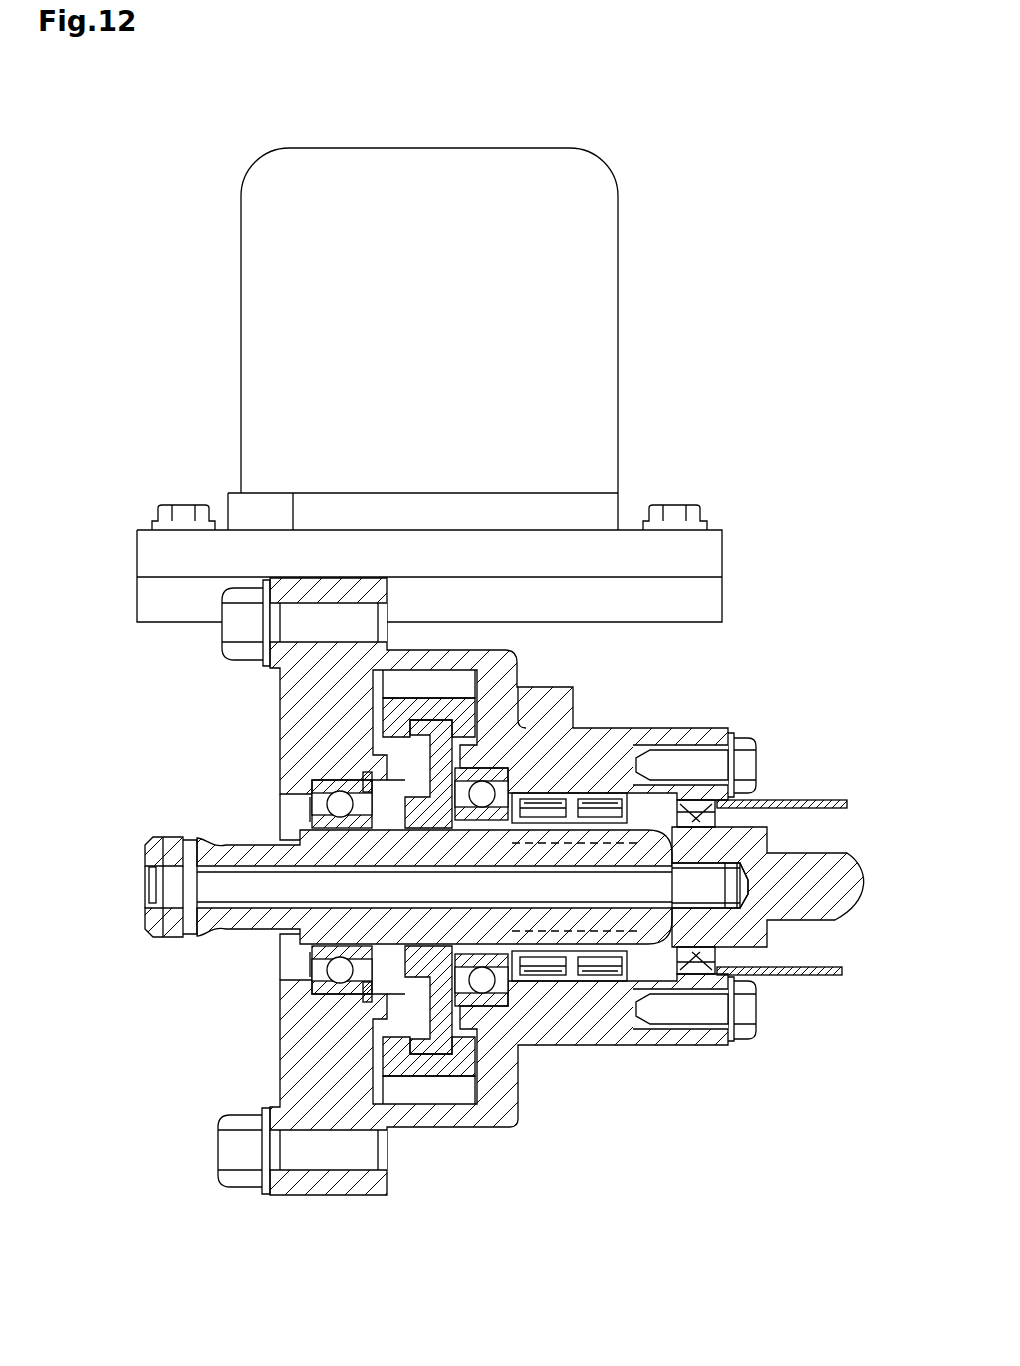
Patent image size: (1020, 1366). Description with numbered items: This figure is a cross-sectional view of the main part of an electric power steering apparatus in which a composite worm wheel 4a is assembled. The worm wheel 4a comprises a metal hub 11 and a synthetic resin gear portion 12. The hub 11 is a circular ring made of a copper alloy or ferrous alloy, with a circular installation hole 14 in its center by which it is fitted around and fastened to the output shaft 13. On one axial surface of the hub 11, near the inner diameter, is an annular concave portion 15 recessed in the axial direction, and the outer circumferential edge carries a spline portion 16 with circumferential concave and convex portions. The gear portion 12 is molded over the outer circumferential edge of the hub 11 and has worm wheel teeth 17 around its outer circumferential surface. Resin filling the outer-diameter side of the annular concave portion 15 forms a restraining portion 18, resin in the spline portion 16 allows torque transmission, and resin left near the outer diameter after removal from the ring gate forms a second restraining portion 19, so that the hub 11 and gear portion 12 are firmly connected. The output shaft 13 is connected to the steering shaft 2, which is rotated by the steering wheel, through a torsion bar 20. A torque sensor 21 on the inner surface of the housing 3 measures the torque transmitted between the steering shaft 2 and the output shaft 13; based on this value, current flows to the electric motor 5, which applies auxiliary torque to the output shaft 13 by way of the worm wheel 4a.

The steering shaft 2 is at (820, 892).
The housing 3 is at (620, 745).
The worm wheel 4a is at (432, 1098).
The electric motor 5 is at (582, 238).
The hub 11 is at (462, 1050).
The gear portion 12 is at (395, 1050).
The output shaft 13 is at (288, 920).
The installation hole 14 is at (395, 860).
The annular concave portion 15 is at (365, 775).
The spline portion 16 is at (440, 720).
The worm wheel teeth 17 is at (403, 690).
The restraining portion 18 is at (407, 753).
The second restraining portion 19 is at (525, 722).
The torsion bar 20 is at (648, 948).
The torque sensor 21 is at (545, 972).